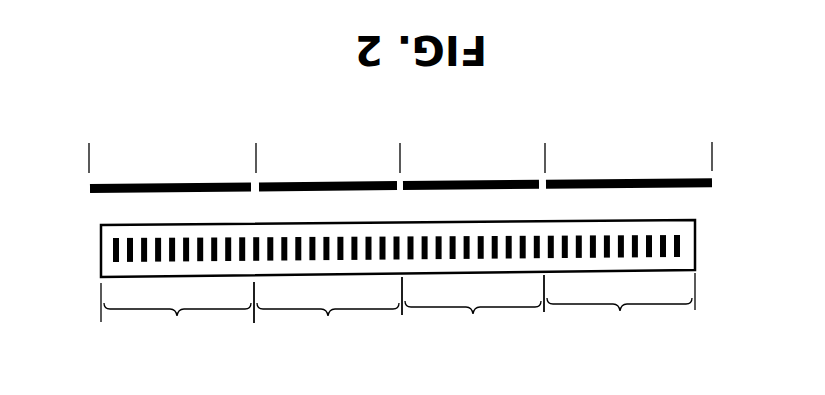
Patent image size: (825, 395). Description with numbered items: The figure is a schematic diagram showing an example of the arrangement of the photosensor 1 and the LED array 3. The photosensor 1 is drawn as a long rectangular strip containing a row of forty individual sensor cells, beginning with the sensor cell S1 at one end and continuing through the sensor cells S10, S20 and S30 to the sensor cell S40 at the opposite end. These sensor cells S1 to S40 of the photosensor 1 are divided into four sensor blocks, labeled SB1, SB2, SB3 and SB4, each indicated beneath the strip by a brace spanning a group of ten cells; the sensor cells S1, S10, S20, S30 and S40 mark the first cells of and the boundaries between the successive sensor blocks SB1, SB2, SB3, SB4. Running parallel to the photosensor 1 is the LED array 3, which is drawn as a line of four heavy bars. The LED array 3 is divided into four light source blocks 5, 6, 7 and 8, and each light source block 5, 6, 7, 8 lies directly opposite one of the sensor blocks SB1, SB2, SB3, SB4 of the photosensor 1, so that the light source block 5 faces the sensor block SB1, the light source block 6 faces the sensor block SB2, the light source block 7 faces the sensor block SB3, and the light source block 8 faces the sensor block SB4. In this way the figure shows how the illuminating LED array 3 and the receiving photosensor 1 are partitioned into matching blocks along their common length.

The photosensor 1 is at (403, 234).
The LED array 3 is at (713, 181).
The light source block 5 is at (564, 183).
The light source block 6 is at (418, 183).
The light source block 7 is at (270, 183).
The light source block 8 is at (108, 183).
The sensor cell S1 is at (677, 236).
The sensor cell S10 is at (551, 237).
The sensor cell S20 is at (410, 238).
The sensor cell S30 is at (258, 238).
The sensor cell S40 is at (119, 238).
The sensor block SB1 is at (619, 308).
The sensor block SB2 is at (473, 310).
The sensor block SB3 is at (328, 311).
The sensor block SB4 is at (177, 315).